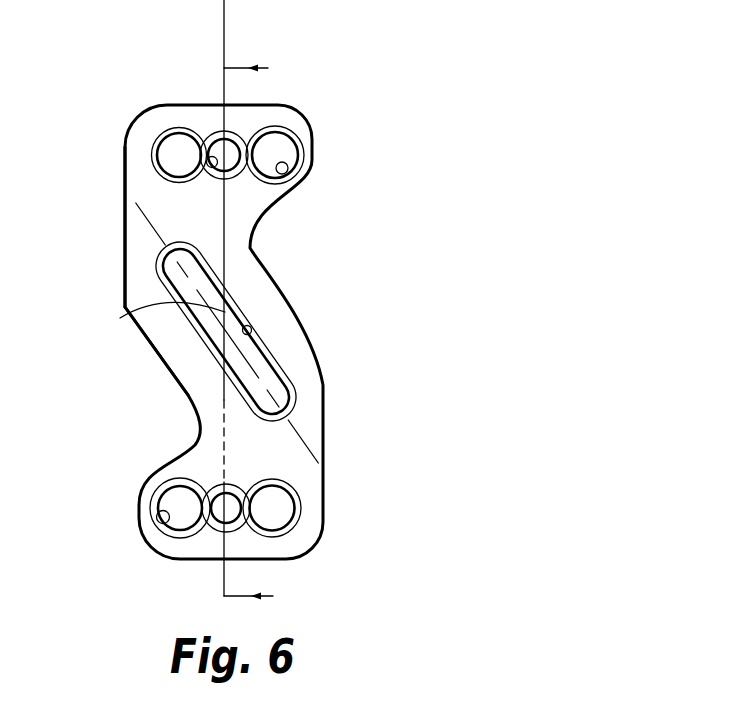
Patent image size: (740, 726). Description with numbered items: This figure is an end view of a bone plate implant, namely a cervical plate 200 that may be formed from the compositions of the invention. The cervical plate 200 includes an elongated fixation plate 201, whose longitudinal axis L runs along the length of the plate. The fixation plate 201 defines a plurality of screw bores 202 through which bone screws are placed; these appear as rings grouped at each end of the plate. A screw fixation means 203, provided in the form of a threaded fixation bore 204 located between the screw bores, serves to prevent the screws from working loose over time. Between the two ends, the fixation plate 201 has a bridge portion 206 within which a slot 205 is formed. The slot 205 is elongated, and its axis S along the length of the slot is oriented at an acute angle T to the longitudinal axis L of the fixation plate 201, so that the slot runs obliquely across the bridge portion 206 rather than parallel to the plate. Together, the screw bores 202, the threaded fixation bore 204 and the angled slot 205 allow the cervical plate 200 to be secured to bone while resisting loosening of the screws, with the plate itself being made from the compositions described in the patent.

The cervical plate 200 is at (336, 80).
The elongated fixation plate 201 is at (116, 210).
The screw bores 202 is at (276, 166).
The screw fixation means 203 is at (208, 135).
The threaded fixation bore 204 is at (217, 158).
The slot 205 is at (253, 335).
The bridge portion 206 is at (161, 344).
The longitudinal axis L is at (223, 20).
The slot axis S is at (150, 235).
The acute angle T is at (163, 326).